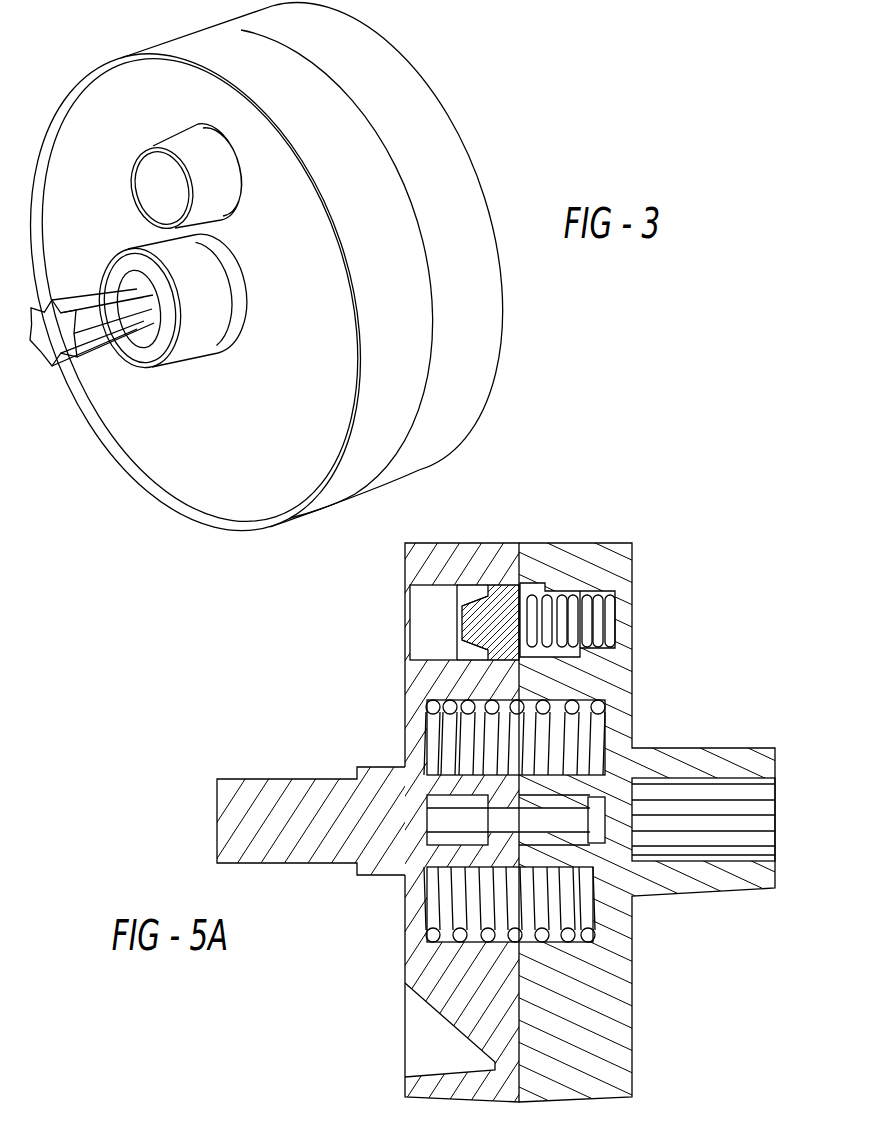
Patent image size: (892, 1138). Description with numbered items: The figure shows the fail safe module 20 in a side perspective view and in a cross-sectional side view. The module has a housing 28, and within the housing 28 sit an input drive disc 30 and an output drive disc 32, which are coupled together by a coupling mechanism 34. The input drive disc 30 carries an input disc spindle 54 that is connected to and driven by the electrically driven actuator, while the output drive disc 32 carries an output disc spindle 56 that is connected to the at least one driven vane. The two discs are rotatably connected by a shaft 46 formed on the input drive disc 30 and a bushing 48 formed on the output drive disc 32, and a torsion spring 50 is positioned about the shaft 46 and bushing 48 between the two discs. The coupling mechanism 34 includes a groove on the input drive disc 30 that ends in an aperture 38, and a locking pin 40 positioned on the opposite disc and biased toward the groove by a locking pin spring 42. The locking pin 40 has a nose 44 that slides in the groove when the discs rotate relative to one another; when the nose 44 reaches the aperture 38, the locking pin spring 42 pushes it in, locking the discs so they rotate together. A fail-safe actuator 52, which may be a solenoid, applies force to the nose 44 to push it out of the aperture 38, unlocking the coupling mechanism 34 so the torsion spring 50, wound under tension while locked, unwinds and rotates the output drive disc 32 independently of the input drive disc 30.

In FIG. 3, the fail safe module 20 is at (450, 66).
In FIG. 3, the housing 28 is at (219, 447).
In FIG. 3, the fail-safe actuator 52 is at (199, 180).
In FIG. 3, the input disc spindle 54 is at (55, 340).
In FIG. 5A, the input disc spindle 54 is at (268, 800).
In FIG. 5A, the input drive disc 30 is at (410, 670).
In FIG. 5A, the output drive disc 32 is at (607, 1005).
In FIG. 5A, the coupling mechanism 34 is at (565, 575).
In FIG. 5A, the aperture 38 is at (480, 655).
In FIG. 5A, the locking pin 40 is at (505, 598).
In FIG. 5A, the locking pin spring 42 is at (617, 607).
In FIG. 5A, the nose 44 is at (470, 600).
In FIG. 5A, the shaft 46 is at (590, 846).
In FIG. 5A, the bushing 48 is at (598, 797).
In FIG. 5A, the torsion spring 50 is at (600, 705).
In FIG. 5A, the output disc spindle 56 is at (733, 882).